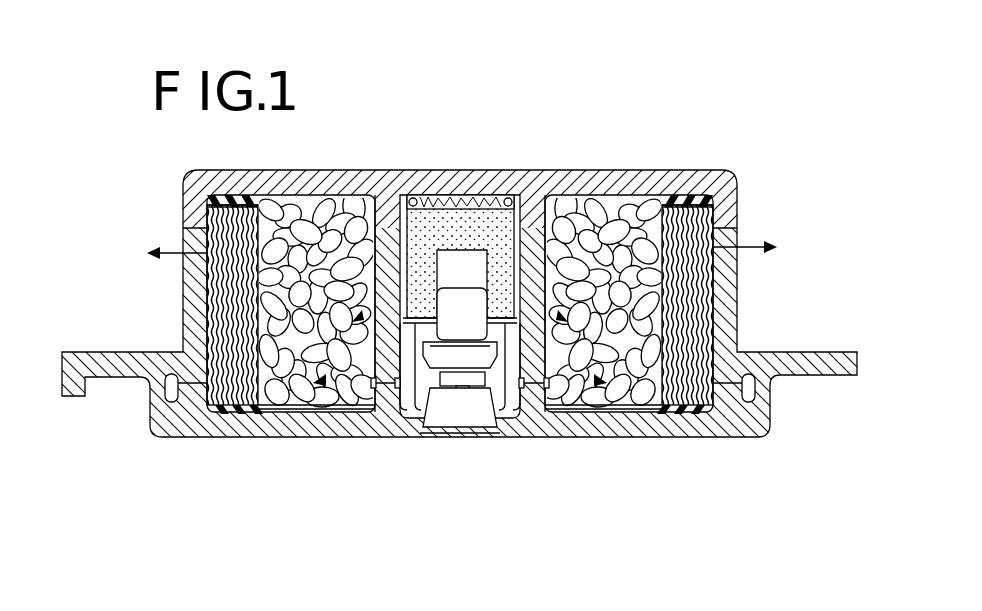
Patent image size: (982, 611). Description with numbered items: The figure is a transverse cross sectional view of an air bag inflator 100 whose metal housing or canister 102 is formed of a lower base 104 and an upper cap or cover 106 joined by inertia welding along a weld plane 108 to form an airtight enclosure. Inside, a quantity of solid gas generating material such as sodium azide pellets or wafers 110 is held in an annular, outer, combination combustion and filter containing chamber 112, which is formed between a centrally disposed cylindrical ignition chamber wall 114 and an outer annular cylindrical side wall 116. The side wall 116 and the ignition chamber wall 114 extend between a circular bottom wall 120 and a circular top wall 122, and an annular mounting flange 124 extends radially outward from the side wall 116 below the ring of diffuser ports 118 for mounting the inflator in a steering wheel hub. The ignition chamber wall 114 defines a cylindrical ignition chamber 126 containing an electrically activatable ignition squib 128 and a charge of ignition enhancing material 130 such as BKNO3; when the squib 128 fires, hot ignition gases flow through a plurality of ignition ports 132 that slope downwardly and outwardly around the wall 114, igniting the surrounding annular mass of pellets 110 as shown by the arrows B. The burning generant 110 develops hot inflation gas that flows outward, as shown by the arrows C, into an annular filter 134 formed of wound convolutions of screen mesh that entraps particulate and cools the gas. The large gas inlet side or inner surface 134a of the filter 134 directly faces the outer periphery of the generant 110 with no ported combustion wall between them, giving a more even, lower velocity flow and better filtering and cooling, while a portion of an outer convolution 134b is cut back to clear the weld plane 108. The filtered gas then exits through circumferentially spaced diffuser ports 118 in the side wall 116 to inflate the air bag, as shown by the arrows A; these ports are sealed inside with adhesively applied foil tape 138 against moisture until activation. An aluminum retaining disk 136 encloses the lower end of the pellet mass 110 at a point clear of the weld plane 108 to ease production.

The air bag inflator 100 is at (487, 504).
The housing 102 is at (459, 291).
The lower base 104 is at (143, 406).
The upper cap or cover 106 is at (748, 174).
The weld plane 108 is at (182, 402).
The gas generating pellets or wafers 110 is at (626, 215).
The combination combustion and filter containing chamber 112 is at (294, 196).
The ignition chamber wall 114 is at (396, 388).
The side wall 116 is at (207, 300).
The diffuser ports 118 is at (207, 270).
The bottom wall 120 is at (300, 412).
The top wall 122 is at (388, 240).
The mounting flange 124 is at (62, 385).
The ignition chamber 126 is at (448, 222).
The ignition squib 128 is at (462, 346).
The ignition enhancing material 130 is at (444, 204).
The ignition ports 132 is at (392, 300).
The filter 134 is at (231, 405).
The gas inlet side or inner surface of the filter 134a is at (270, 196).
The outer convolution of the filter 134b is at (222, 414).
The retaining disk 136 is at (336, 412).
The foil tape 138 is at (213, 214).
The arrows A is at (175, 252).
The arrows B is at (357, 316).
The arrows C is at (228, 360).